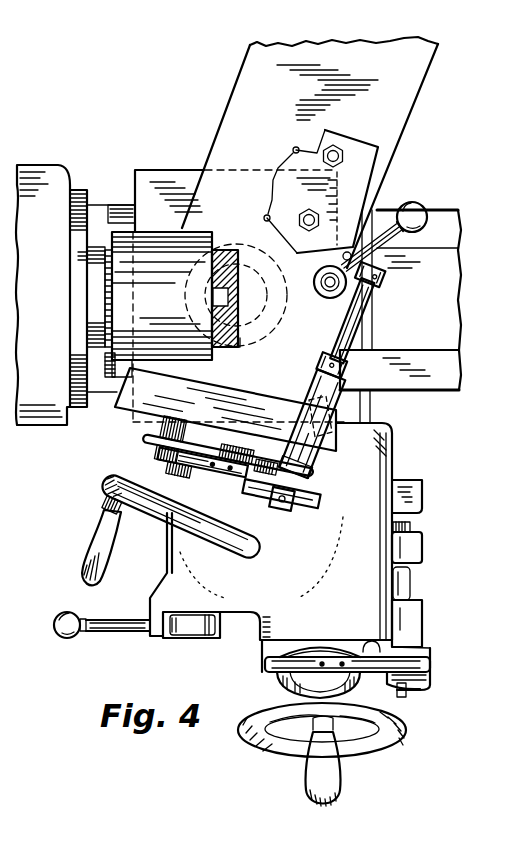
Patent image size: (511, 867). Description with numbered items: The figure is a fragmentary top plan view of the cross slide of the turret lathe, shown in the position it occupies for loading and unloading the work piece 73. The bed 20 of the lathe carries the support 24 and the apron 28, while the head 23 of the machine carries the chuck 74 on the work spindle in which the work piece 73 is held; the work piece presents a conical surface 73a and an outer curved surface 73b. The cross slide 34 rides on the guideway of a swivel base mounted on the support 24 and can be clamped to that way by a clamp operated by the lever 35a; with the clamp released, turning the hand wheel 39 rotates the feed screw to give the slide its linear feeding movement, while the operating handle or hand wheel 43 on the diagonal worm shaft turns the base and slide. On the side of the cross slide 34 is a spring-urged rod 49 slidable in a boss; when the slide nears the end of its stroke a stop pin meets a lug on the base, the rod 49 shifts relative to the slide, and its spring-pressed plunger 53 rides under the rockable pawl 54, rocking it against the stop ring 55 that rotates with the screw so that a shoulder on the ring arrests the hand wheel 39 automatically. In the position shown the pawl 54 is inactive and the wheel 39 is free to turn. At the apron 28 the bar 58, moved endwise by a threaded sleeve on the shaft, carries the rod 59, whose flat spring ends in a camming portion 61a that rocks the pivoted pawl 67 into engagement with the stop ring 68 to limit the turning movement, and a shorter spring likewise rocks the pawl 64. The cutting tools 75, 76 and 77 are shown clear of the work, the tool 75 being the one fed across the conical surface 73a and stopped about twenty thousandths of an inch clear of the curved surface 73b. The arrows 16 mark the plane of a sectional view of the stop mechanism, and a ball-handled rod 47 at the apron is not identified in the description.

The section line 16 is at (403, 183).
The bed 20 is at (442, 217).
The head 23 is at (62, 170).
The support 24 is at (160, 172).
The apron 28 is at (163, 560).
The cross slide 34 is at (420, 80).
The lever 35a is at (392, 250).
The hand wheel 39 is at (106, 478).
The operating handle 43 is at (250, 740).
The control rod 47 is at (125, 632).
The rod 49 is at (352, 323).
The spring-pressed plunger 53 is at (284, 517).
The rockable pawl 54 is at (317, 503).
The stop ring 55 is at (158, 447).
The bar 58 is at (422, 505).
The rod 59 is at (410, 588).
The camming portion 61a is at (403, 695).
The pawl 64 is at (430, 660).
The pivoted pawl 67 is at (432, 676).
The stop ring 68 is at (276, 686).
The work piece 73 is at (223, 250).
The conical surface 73a is at (228, 318).
The outer curved surface 73b is at (252, 348).
The chuck 74 is at (162, 304).
The cutting tool 75 is at (267, 222).
The cutting tool 76 is at (293, 150).
The cutting tool 77 is at (279, 166).